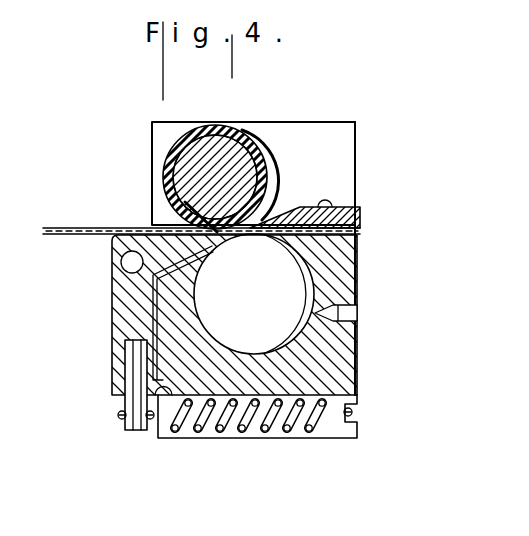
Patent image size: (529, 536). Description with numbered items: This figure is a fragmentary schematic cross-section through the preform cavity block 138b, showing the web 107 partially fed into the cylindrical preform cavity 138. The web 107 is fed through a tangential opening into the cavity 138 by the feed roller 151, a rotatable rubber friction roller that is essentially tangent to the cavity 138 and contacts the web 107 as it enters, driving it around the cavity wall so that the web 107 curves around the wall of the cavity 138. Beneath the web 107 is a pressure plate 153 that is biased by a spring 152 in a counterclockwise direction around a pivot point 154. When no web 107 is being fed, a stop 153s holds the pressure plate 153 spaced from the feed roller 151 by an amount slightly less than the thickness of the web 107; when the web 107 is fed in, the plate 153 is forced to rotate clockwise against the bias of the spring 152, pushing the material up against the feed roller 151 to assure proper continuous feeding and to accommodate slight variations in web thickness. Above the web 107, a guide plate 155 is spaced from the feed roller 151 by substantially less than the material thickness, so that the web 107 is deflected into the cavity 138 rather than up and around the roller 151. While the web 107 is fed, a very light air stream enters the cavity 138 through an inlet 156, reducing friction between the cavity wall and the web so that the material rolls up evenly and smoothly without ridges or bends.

The web 107 is at (80, 227).
The feed roller 151 is at (240, 133).
The spring 152 is at (285, 425).
The pressure plate 153 is at (128, 312).
The stop 153s is at (160, 440).
The pivot point 154 is at (121, 262).
The guide plate 155 is at (353, 213).
The inlet 156 is at (348, 312).
The preform cavity 138 is at (303, 283).
The preform cavity block 138b is at (335, 373).